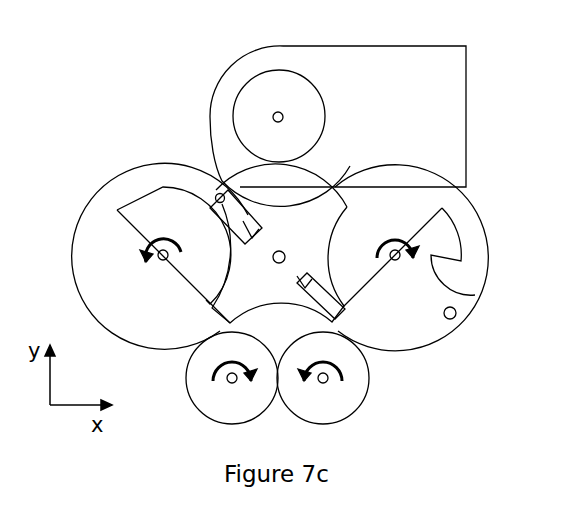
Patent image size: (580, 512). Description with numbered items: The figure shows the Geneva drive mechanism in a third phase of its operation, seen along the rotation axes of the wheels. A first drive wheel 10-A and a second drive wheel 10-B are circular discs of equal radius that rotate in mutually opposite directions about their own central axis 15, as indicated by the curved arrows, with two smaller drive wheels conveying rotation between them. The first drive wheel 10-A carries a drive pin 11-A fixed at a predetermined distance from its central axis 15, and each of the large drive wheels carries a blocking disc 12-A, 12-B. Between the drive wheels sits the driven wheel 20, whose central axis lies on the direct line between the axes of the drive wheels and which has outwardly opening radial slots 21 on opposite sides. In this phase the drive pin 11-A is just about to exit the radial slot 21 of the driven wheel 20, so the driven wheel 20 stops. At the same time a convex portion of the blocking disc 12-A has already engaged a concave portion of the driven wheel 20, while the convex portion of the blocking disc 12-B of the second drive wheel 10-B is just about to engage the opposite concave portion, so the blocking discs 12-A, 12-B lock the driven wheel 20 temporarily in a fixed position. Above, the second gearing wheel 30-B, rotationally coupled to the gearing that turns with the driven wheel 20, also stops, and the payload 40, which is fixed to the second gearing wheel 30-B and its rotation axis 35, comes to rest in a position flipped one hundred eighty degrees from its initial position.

The first drive wheel 10-A is at (106, 249).
The second drive wheel 10-B is at (467, 190).
The drive pin 11-A is at (218, 180).
The blocking disc 12-A is at (207, 272).
The blocking disc 12-B is at (476, 300).
The central axis 15 is at (396, 262).
The driven wheel 20 is at (318, 238).
The radial slot 21 is at (244, 222).
The second gearing wheel 30-B is at (277, 90).
The rotation axis 35 is at (285, 118).
The payload 40 is at (403, 63).